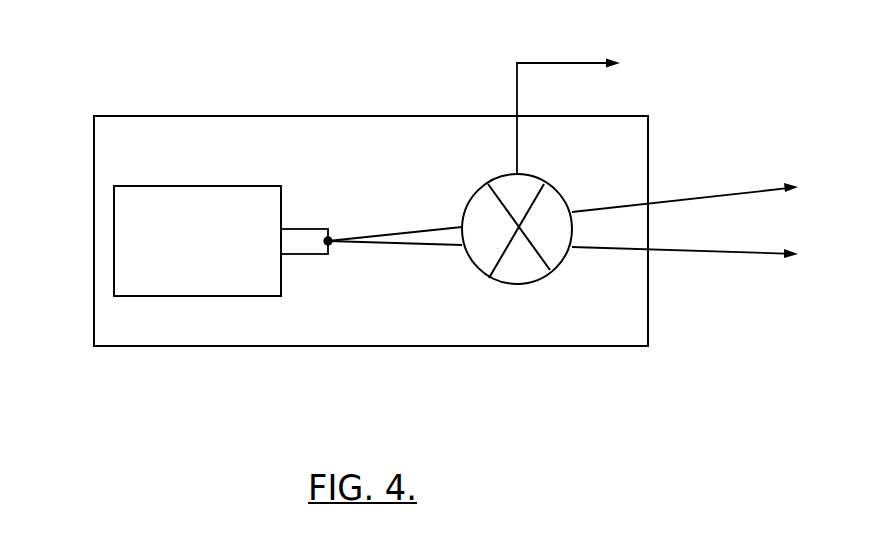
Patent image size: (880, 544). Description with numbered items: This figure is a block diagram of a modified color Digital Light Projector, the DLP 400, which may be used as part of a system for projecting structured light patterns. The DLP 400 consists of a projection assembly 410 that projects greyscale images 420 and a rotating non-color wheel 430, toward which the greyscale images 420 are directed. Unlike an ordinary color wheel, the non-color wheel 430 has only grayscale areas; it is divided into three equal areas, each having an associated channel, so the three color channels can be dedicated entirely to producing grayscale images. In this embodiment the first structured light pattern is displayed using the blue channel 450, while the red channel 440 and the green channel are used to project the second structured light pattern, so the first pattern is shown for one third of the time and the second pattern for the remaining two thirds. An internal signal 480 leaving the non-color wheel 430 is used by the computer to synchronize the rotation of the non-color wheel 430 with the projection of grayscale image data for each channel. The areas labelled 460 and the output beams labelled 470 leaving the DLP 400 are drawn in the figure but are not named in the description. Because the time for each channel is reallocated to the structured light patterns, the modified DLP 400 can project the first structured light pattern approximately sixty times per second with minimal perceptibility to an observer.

The DLP 400 is at (94, 213).
The projection assembly 410 is at (180, 186).
The greyscale images 420 is at (402, 233).
The rotating non-color wheel 430 is at (518, 287).
The red channel 440 is at (525, 198).
The blue channel 450 is at (478, 225).
The output port of beam splitting element 460 is at (552, 253).
The output light beams 470 is at (723, 193).
The internal signal 480 is at (598, 111).